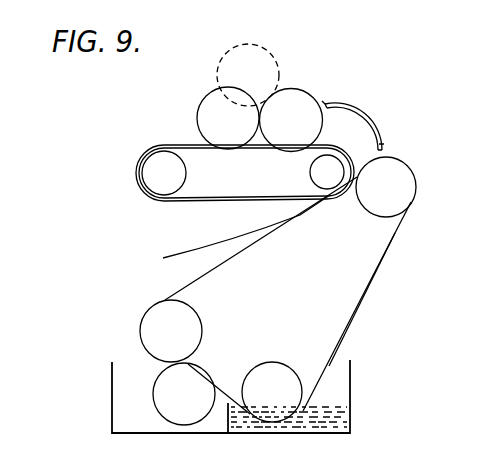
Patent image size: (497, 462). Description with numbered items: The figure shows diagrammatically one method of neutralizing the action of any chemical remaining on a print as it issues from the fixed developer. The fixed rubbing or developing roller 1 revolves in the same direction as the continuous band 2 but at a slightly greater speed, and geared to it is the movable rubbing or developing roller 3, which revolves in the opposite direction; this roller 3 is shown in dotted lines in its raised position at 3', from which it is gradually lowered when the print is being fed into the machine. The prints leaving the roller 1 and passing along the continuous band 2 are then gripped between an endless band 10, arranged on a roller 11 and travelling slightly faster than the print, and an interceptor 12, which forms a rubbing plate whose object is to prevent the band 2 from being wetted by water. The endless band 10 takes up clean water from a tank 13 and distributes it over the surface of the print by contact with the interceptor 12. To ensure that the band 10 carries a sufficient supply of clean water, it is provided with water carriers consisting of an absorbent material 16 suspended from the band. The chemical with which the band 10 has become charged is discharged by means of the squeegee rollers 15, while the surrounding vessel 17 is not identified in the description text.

The raised position of movable rubbing roller 3' is at (257, 72).
The movable rubbing or developing roller 3 is at (218, 118).
The fixed rubbing or developing roller 1 is at (312, 97).
The continuous band 2 is at (249, 196).
The roller 11 is at (416, 190).
The interceptor 12 is at (194, 252).
The endless band 10 is at (212, 271).
The absorbent material 16 is at (389, 258).
The squeegee rollers 15 is at (200, 345).
The tank 13 is at (350, 393).
The tank 17 is at (112, 393).